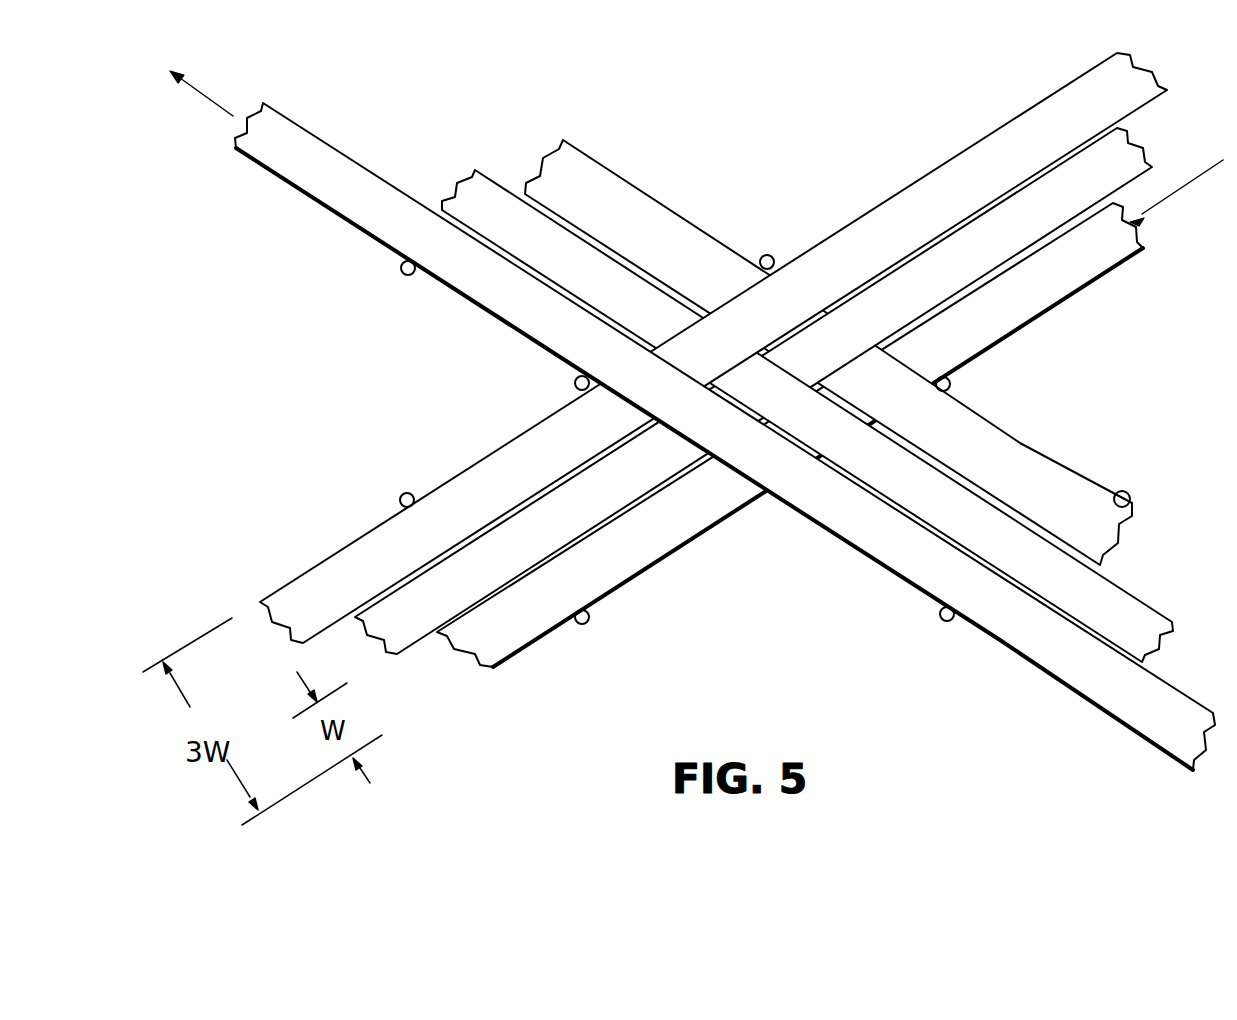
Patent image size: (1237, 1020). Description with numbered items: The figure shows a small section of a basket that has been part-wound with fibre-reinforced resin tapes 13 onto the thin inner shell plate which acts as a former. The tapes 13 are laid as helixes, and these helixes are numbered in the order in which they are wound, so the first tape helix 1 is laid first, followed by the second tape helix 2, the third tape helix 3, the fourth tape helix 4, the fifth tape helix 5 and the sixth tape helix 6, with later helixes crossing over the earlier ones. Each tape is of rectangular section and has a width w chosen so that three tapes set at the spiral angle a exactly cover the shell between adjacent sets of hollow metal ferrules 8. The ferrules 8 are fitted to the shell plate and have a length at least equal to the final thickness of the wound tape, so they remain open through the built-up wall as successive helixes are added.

The first tape helix 1 is at (790, 435).
The second tape helix 2 is at (828, 352).
The third tape helix 3 is at (753, 391).
The fourth tape helix 4 is at (807, 416).
The fifth tape helix 5 is at (713, 348).
The sixth tape helix 6 is at (725, 436).
The hollow metal ferrules 8 is at (405, 276).
The tapes 13 is at (815, 243).